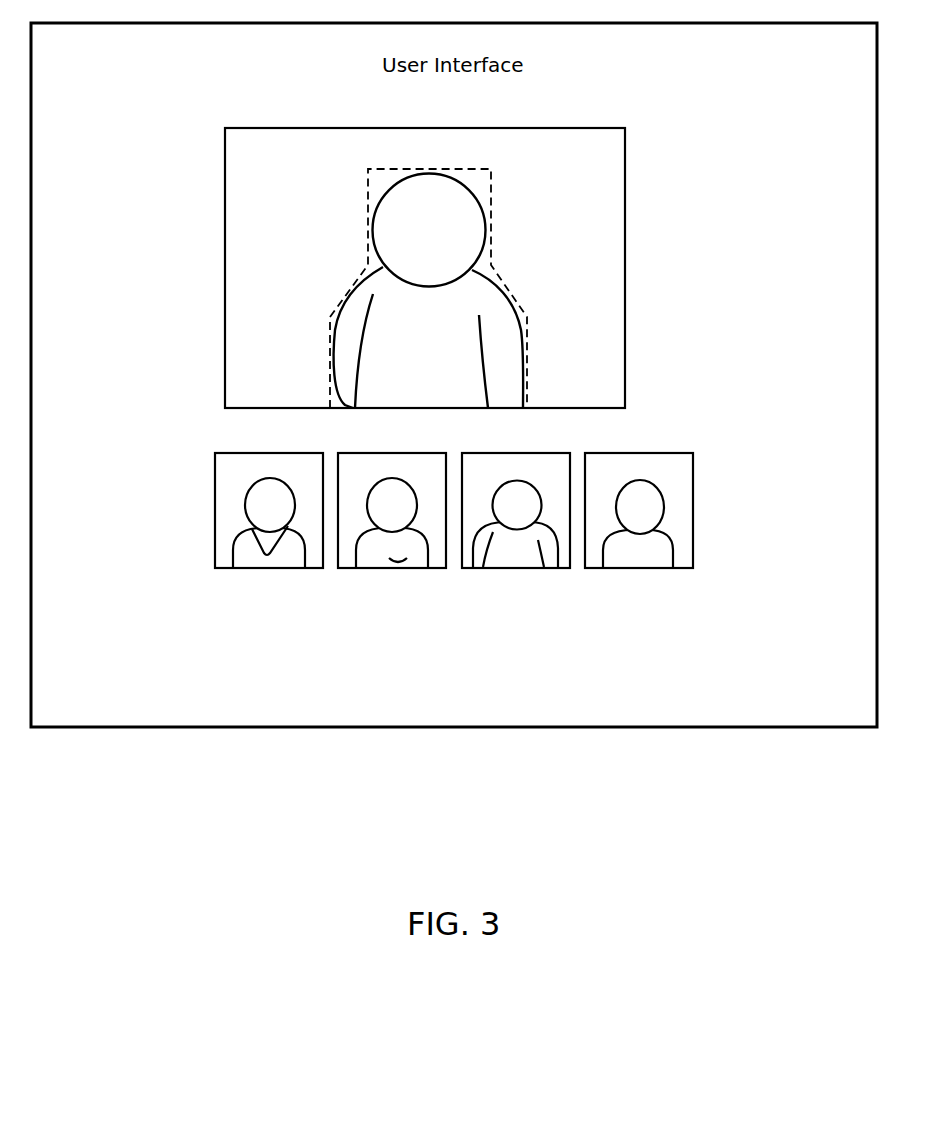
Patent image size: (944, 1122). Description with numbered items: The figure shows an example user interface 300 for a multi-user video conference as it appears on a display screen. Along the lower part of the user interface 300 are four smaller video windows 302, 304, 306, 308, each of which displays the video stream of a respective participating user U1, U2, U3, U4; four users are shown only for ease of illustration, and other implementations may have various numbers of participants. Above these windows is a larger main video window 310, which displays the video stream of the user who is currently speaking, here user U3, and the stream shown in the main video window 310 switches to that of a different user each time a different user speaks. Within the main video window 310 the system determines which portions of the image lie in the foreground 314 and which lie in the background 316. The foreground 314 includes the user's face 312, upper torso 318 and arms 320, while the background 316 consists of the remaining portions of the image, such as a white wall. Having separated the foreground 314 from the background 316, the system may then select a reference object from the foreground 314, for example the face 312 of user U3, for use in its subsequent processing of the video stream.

The user interface 300 is at (474, 832).
The video window 302 is at (227, 452).
The video window 304 is at (350, 452).
The video window 306 is at (474, 452).
The video window 308 is at (598, 452).
The main video window 310 is at (285, 128).
The face 312 is at (397, 226).
The foreground 314 is at (480, 193).
The background 316 is at (605, 185).
The upper torso 318 is at (395, 321).
The arms 320 is at (345, 362).
The user U1 is at (293, 505).
The user U2 is at (416, 505).
The user U3 is at (540, 505).
The user U4 is at (664, 505).